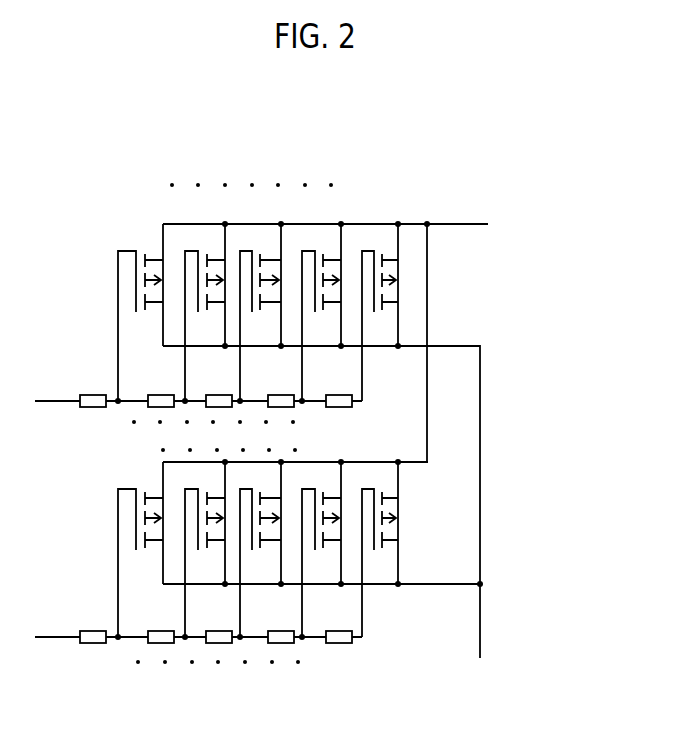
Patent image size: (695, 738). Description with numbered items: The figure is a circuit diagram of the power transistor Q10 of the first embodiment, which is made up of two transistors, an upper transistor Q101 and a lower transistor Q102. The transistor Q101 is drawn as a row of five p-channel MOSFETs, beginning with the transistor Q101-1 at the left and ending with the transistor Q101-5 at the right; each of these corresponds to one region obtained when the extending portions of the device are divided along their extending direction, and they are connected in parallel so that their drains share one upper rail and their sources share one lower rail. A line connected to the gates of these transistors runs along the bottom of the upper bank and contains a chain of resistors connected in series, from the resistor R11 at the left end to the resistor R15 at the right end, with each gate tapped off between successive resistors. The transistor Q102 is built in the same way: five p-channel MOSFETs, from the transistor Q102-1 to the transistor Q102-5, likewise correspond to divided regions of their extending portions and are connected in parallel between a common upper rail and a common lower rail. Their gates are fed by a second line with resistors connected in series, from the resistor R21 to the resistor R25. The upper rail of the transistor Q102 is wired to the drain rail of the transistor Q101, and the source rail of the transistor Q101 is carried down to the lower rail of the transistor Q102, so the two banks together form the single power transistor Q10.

The power transistor Q10 is at (600, 105).
The transistor Q101 is at (478, 179).
The transistor Q102 is at (408, 669).
The transistor Q101-1 is at (147, 245).
The transistor Q101-5 is at (386, 248).
The transistor Q102-1 is at (140, 486).
The transistor Q102-5 is at (388, 492).
The resistor R11 is at (91, 416).
The resistor R15 is at (346, 416).
The resistor R21 is at (95, 654).
The resistor R25 is at (346, 654).